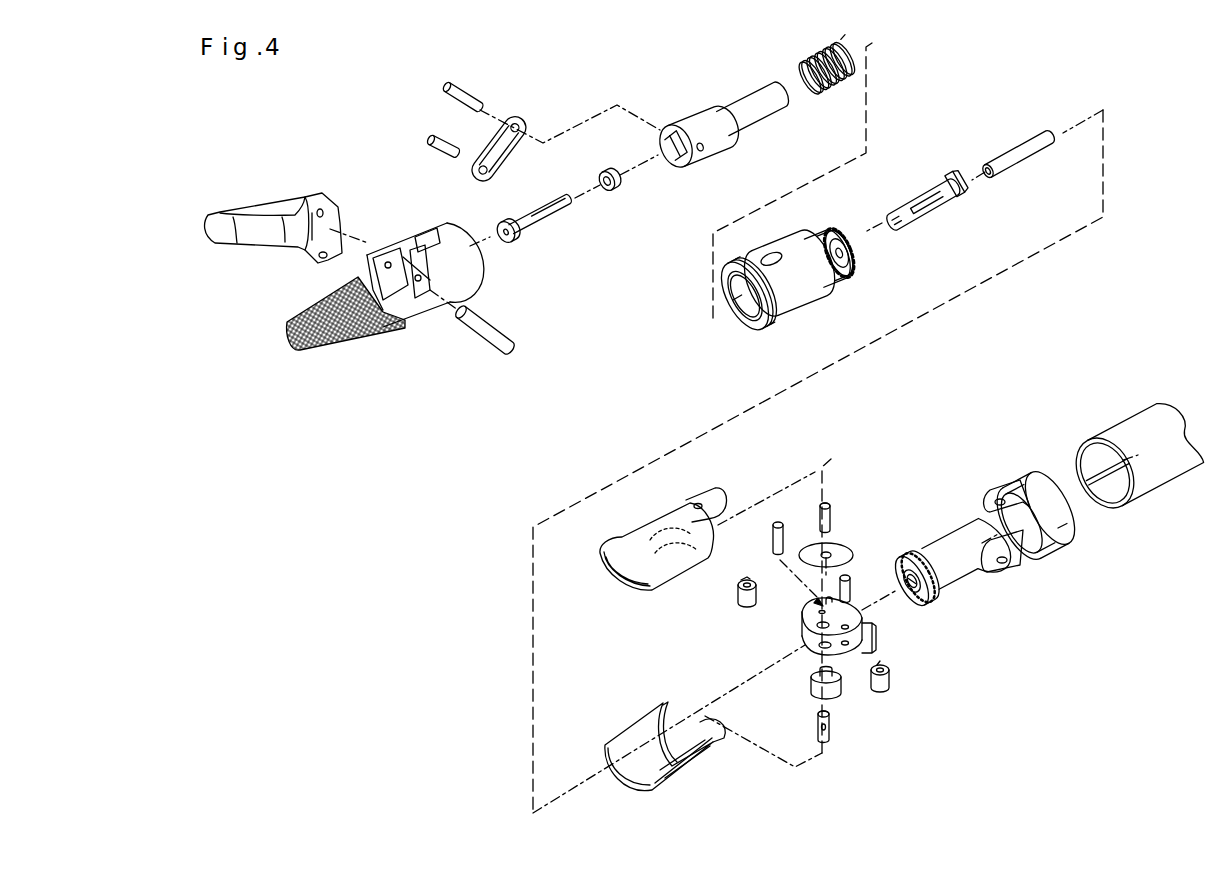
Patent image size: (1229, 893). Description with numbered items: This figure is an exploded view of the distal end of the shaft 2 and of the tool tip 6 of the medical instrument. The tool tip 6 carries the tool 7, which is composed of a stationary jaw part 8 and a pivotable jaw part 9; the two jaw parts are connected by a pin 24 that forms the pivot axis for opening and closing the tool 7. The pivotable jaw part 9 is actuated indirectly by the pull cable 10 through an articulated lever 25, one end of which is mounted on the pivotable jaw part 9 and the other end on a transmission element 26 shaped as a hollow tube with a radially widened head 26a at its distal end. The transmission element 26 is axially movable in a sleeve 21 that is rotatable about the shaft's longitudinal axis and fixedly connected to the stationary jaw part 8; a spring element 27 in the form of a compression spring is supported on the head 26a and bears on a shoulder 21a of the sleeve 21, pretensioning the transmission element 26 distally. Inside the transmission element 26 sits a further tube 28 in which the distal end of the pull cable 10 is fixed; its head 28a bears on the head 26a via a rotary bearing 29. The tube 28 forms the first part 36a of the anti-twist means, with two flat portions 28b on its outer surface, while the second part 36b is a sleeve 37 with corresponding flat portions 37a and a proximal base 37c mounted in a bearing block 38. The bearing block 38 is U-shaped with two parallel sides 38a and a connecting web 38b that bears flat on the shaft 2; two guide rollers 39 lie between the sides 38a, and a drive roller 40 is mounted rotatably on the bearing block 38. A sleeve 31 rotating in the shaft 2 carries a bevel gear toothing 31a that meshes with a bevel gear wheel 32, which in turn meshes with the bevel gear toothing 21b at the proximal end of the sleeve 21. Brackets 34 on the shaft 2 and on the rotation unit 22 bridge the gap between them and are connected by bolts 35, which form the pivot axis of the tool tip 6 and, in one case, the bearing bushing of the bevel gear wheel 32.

The shaft 2 is at (1133, 426).
The tool tip 6 is at (374, 515).
The tool 7 is at (253, 184).
The stationary jaw part 8 is at (338, 343).
The pivotable jaw part 9 is at (238, 218).
The pull cable 10 is at (1048, 143).
The sleeve 21 is at (828, 276).
The shoulder 21a is at (830, 256).
The bevel gear toothing 21b is at (823, 283).
The rotation unit 22 is at (604, 557).
The pin 24 is at (494, 340).
The articulated lever 25 is at (500, 140).
The transmission element 26 is at (763, 94).
The head 26a is at (703, 122).
The spring element 27 is at (852, 53).
The tube 28 is at (546, 242).
The head 28a is at (521, 237).
The flat portions 28b is at (541, 213).
The rotary bearing 29 is at (621, 191).
The sleeve 31 is at (953, 549).
The bevel gear toothing 31a is at (950, 550).
The bevel gear wheel 32 is at (833, 547).
The brackets 34 is at (706, 497).
The bolts 35 is at (828, 512).
The first part 36a is at (562, 166).
The second part 36b is at (924, 186).
The sleeve 37 is at (938, 212).
The flat portions 37a is at (927, 202).
The base 37c is at (957, 183).
The bearing block 38 is at (840, 636).
The sides 38a is at (832, 626).
The web 38b is at (869, 638).
The guide rollers 39 is at (738, 600).
The drive roller 40 is at (840, 693).